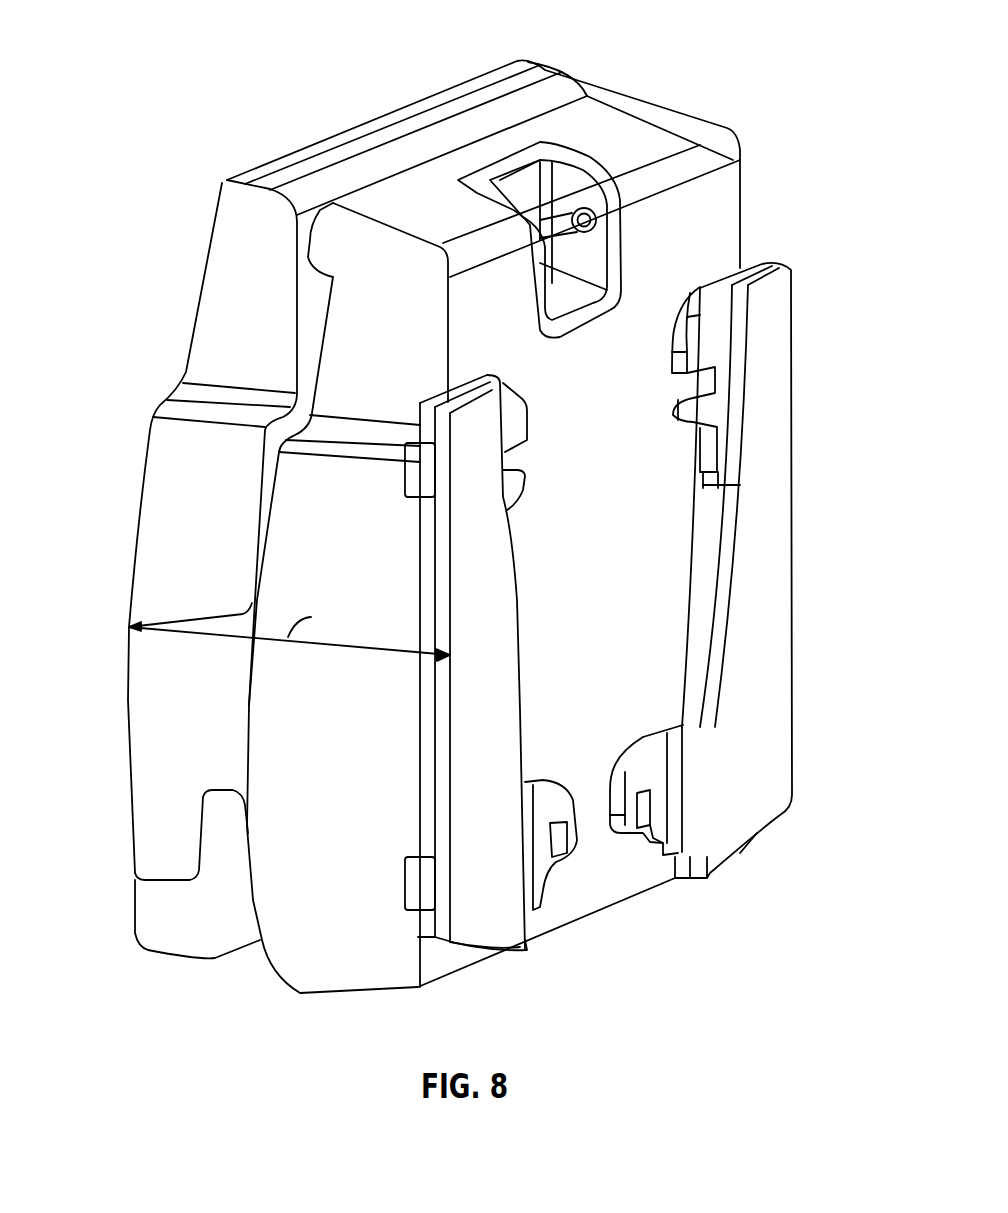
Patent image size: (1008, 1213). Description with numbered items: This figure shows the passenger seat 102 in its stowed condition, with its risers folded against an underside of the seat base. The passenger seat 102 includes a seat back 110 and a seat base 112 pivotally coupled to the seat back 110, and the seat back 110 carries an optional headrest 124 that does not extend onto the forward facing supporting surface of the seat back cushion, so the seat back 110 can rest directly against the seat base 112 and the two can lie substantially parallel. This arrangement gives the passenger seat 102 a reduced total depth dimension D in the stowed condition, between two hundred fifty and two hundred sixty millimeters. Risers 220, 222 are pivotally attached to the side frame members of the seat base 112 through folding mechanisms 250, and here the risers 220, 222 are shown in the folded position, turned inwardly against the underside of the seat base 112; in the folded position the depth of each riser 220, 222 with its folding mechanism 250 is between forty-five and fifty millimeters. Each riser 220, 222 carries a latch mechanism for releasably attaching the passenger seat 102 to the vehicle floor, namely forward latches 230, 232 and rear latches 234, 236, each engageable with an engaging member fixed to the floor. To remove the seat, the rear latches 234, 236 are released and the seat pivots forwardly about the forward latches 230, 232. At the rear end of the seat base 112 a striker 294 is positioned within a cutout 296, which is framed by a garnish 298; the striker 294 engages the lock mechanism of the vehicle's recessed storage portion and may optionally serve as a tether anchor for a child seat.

The passenger seat 102 is at (207, 88).
The seat back 110 is at (147, 720).
The seat base 112 is at (330, 973).
The headrest 124 is at (183, 927).
The riser 220 is at (492, 710).
The riser 222 is at (773, 520).
The forward latch 230 is at (571, 836).
The forward latch 232 is at (632, 815).
The rear latch 234 is at (517, 485).
The rear latch 236 is at (718, 320).
The folding mechanism 250 is at (418, 470).
The striker 294 is at (597, 222).
The cutout 296 is at (540, 170).
The garnish 298 is at (587, 330).